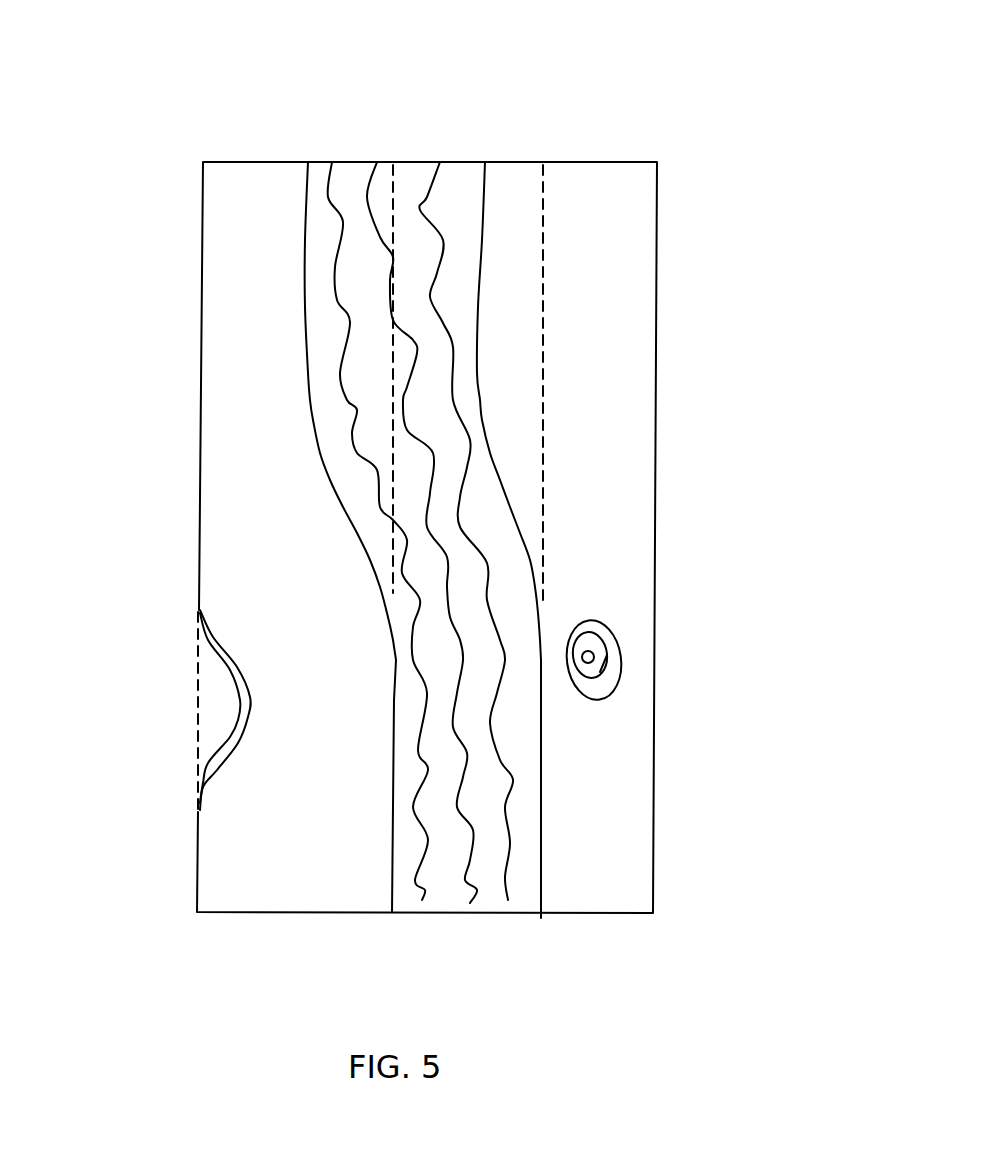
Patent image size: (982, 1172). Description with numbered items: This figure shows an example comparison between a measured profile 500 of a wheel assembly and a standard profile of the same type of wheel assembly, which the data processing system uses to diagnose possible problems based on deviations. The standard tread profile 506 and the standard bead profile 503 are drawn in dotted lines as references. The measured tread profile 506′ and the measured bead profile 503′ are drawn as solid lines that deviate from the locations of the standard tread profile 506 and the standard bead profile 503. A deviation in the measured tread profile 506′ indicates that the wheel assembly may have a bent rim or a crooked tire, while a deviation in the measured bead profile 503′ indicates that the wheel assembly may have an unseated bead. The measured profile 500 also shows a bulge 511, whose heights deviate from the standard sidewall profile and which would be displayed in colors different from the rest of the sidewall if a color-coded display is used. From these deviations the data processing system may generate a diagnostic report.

The measured profile 500 is at (128, 77).
The measured tread profile 506′ is at (361, 172).
The standard tread profile 506 is at (543, 180).
The measured bead profile 503′ is at (197, 627).
The standard bead profile 503 is at (198, 732).
The bulge 511 is at (622, 652).